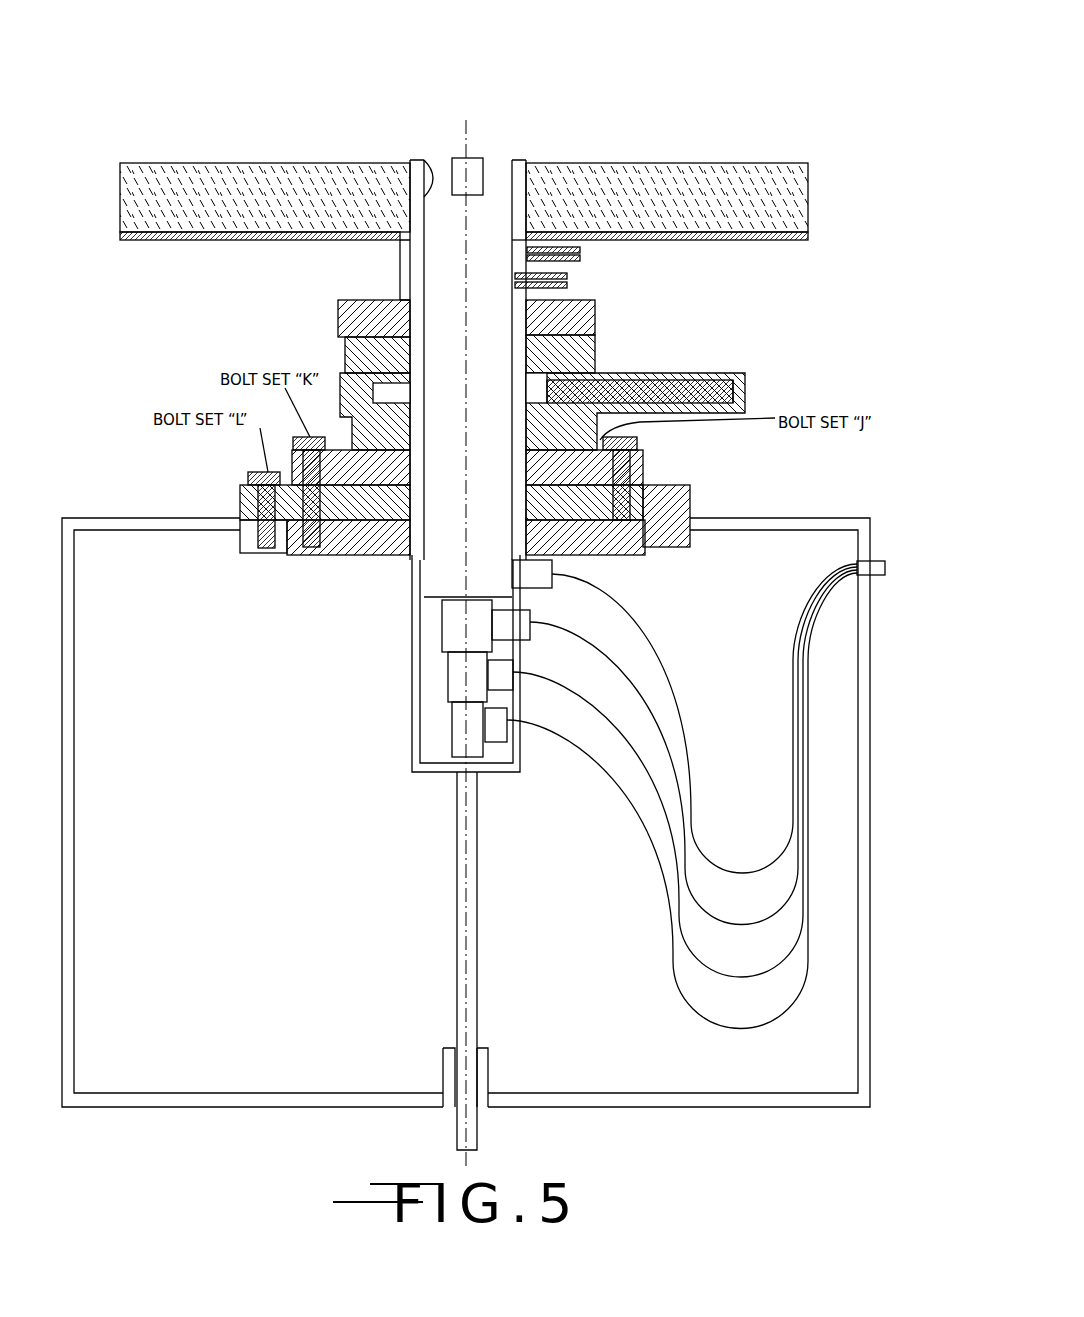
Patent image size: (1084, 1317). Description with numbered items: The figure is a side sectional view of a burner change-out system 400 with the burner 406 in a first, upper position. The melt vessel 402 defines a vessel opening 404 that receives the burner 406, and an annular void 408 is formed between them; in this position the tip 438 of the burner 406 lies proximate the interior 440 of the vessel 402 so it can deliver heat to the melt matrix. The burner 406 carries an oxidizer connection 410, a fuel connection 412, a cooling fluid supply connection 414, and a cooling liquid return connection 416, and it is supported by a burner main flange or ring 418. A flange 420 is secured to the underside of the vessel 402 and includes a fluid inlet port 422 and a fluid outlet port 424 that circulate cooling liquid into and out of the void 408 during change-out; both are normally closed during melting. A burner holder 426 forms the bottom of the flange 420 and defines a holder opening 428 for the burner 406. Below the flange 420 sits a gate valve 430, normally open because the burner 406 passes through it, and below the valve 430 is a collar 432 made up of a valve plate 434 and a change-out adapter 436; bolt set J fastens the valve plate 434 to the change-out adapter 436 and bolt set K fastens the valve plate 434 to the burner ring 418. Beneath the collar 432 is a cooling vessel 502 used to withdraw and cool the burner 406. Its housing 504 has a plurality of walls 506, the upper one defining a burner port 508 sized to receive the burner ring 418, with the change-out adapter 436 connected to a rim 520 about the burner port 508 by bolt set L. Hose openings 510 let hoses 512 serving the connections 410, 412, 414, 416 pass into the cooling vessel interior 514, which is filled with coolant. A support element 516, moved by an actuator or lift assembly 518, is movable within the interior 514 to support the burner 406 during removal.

The burner change-out system 400 is at (842, 300).
The melt vessel 402 is at (706, 180).
The vessel opening 404 is at (430, 156).
The burner 406 is at (495, 192).
The annular void 408 is at (528, 194).
The oxidizer connection 410 is at (522, 588).
The fuel connection 412 is at (532, 636).
The cooling fluid supply connection 414 is at (510, 675).
The cooling liquid return connection 416 is at (512, 733).
The burner main flange or ring 418 is at (346, 547).
The flange 420 is at (736, 238).
The fluid inlet port 422 is at (582, 253).
The fluid outlet port 424 is at (568, 281).
The burner holder 426 is at (366, 318).
The holder opening 428 is at (432, 316).
The valve 430 is at (586, 360).
The collar 432 is at (226, 433).
The valve plate 434 is at (636, 468).
The change-out adapter 436 is at (670, 507).
The tip 438 is at (443, 156).
The interior 440 is at (238, 34).
The cooling vessel 502 is at (862, 752).
The housing 504 is at (68, 822).
The walls 506 is at (872, 540).
The burner port 508 is at (646, 558).
The hose openings 510 is at (886, 572).
The hoses 512 is at (690, 968).
The cooling vessel interior 514 is at (316, 908).
The support element 516 is at (413, 728).
The actuator or lift assembly 518 is at (458, 985).
The rim 520 is at (250, 532).